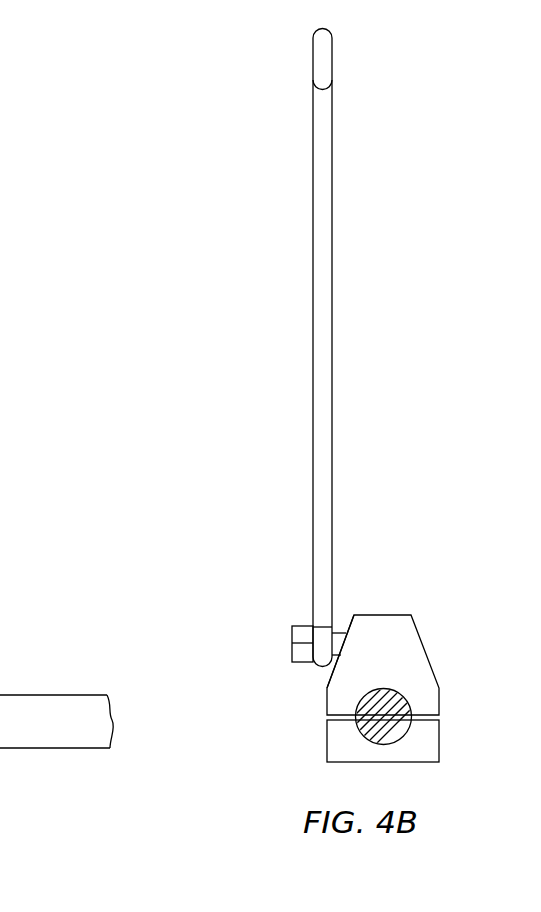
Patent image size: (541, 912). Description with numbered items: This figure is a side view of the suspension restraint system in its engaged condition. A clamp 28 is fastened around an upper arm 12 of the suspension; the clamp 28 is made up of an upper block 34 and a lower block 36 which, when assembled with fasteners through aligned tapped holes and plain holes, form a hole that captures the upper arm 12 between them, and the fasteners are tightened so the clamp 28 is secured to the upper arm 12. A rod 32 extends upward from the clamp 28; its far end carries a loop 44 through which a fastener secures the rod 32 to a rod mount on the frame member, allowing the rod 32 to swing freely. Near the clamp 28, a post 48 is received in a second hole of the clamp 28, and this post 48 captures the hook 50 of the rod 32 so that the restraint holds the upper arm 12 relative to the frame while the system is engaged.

The upper arm 12 is at (382, 714).
The clamp 28 is at (345, 683).
The rod 32 is at (322, 246).
The upper block 34 is at (403, 645).
The lower block 36 is at (415, 749).
The loop 44 is at (326, 55).
The post 48 is at (296, 641).
The hook 50 is at (326, 641).